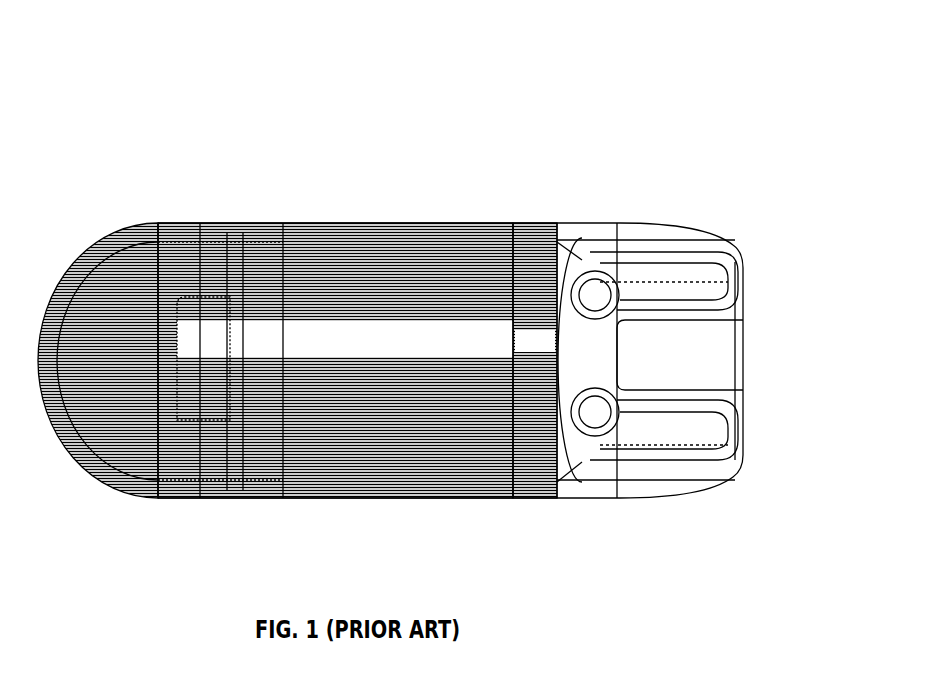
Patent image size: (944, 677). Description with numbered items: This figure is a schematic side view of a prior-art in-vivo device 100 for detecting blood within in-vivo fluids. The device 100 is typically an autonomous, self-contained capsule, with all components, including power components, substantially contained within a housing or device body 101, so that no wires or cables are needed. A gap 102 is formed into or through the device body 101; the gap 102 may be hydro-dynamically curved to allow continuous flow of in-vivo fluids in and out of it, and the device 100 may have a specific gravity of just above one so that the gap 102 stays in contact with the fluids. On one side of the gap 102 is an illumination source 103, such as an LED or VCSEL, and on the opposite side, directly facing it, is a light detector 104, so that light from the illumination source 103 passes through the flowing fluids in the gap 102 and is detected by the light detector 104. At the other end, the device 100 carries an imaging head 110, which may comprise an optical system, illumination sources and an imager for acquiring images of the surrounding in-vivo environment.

The in-vivo device 100 is at (440, 293).
The device body 101 is at (487, 223).
The gap 102 is at (668, 362).
The illumination source 103 is at (683, 293).
The light detector 104 is at (657, 418).
The imaging head 110 is at (177, 233).